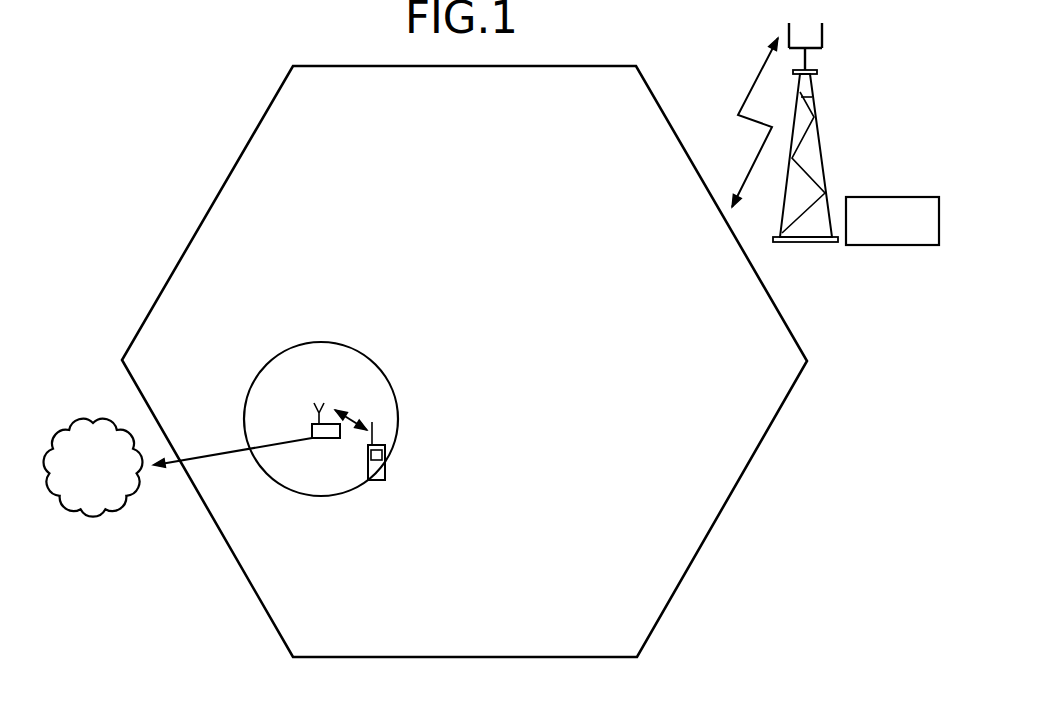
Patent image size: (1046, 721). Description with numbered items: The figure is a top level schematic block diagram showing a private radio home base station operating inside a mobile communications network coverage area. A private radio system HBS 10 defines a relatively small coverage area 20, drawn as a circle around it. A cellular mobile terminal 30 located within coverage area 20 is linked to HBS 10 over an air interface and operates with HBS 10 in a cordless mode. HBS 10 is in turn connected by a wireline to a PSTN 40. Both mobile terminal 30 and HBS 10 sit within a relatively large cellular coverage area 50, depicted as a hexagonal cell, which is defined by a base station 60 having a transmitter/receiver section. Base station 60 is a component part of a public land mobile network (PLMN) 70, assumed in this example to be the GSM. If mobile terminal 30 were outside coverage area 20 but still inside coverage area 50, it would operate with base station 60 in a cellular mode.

The private radio system HBS 10 is at (333, 438).
The coverage area 20 is at (372, 390).
The cellular mobile terminal 30 is at (385, 463).
The PSTN 40 is at (112, 517).
The cellular coverage area 50 is at (722, 483).
The base station 60 is at (817, 108).
The public land mobile network (PLMN) 70 is at (880, 197).